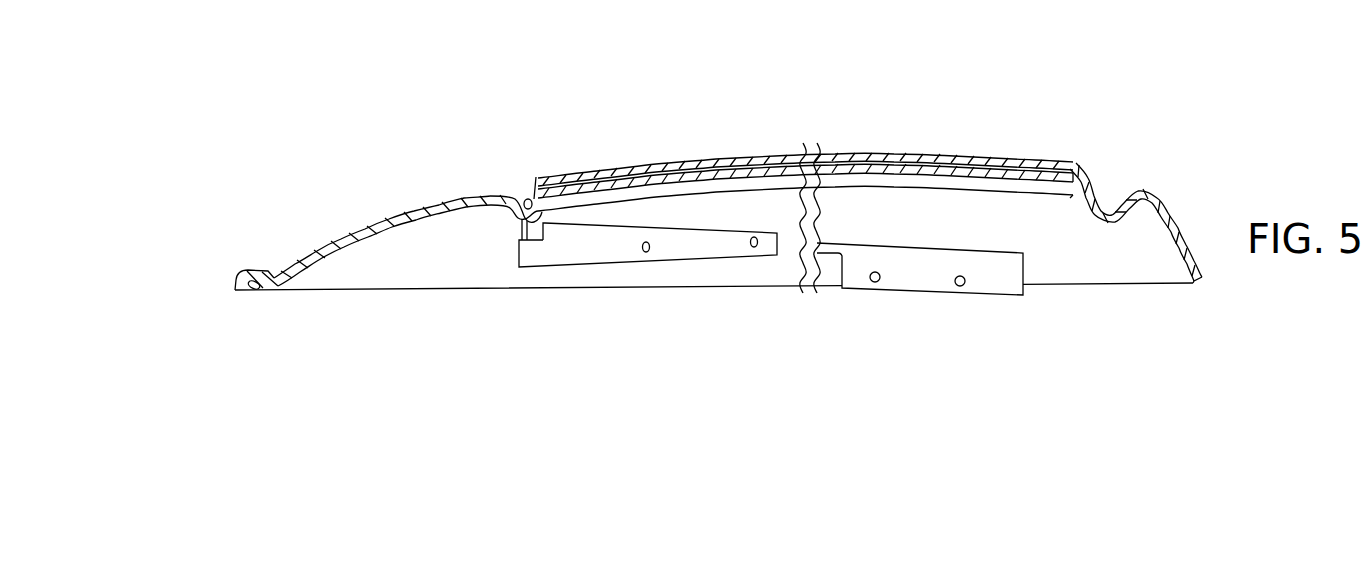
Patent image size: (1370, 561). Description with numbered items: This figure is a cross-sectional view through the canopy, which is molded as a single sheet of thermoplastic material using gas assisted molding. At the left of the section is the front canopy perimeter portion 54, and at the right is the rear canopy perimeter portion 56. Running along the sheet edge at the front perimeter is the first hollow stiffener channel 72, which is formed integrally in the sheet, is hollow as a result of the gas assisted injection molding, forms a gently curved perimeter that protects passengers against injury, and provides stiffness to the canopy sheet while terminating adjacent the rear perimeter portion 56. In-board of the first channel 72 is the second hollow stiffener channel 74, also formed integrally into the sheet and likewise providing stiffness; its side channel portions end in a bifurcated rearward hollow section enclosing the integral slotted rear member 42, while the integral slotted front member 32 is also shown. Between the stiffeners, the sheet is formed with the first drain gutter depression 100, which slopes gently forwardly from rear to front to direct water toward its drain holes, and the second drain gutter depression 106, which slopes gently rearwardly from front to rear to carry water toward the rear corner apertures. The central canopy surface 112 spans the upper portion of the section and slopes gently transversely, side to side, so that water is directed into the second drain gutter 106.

The slotted front member 32 is at (612, 252).
The slotted rear member 42 is at (914, 280).
The front canopy perimeter portion 54 is at (237, 283).
The rear canopy perimeter portion 56 is at (1205, 277).
The first hollow stiffener channel 72 is at (252, 289).
The second hollow stiffener channel 74 is at (530, 198).
The first drain gutter depression 100 is at (268, 270).
The second drain gutter depression 106 is at (524, 199).
The central canopy surface 112 is at (932, 155).